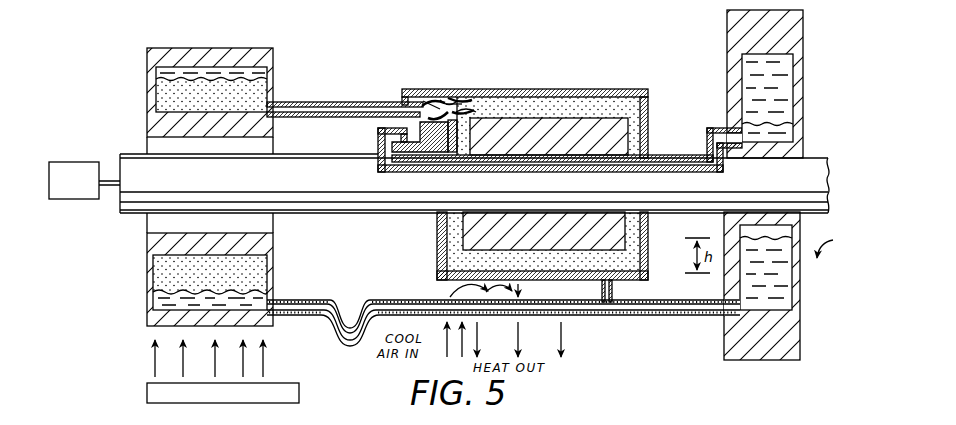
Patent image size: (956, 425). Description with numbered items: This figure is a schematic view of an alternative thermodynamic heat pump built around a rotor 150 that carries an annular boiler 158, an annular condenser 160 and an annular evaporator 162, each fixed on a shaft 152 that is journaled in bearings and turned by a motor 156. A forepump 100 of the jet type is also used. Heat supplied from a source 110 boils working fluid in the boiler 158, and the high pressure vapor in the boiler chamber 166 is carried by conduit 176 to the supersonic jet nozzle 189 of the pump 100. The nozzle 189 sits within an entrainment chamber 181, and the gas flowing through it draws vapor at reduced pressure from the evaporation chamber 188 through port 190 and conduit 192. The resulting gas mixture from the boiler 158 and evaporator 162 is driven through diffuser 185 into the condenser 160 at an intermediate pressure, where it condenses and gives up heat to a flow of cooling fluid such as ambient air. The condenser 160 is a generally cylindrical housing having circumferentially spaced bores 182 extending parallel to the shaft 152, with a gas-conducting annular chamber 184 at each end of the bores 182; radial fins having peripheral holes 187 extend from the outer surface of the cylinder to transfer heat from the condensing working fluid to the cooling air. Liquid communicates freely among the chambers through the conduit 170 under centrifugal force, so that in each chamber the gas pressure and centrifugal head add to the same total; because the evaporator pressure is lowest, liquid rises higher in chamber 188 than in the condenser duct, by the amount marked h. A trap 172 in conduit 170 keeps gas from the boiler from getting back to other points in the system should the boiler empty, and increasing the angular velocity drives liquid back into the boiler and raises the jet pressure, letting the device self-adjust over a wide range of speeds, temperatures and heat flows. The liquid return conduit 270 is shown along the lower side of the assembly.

The forepump 100 is at (455, 83).
The heat source 110 is at (299, 392).
The rotor 150 is at (547, 112).
The shaft 152 is at (815, 158).
The motor 156 is at (79, 164).
The annular boiler 158 is at (171, 195).
The annular condenser 160 is at (435, 240).
The annular evaporator 162 is at (803, 286).
The boiler chamber 166 is at (165, 277).
The conduit 170 is at (675, 316).
The trap 172 is at (352, 346).
The conduit 176 is at (325, 88).
The entrainment chamber 181 is at (420, 118).
The bores 182 is at (607, 107).
The gas-conducting annular chamber 184 is at (633, 130).
The diffuser 185 is at (452, 100).
The peripheral holes 187 is at (465, 118).
The evaporation chamber 188 is at (783, 236).
The jet nozzle 189 is at (425, 98).
The port 190 is at (476, 106).
The conduit 192 is at (657, 158).
The conduit 270 is at (320, 319).